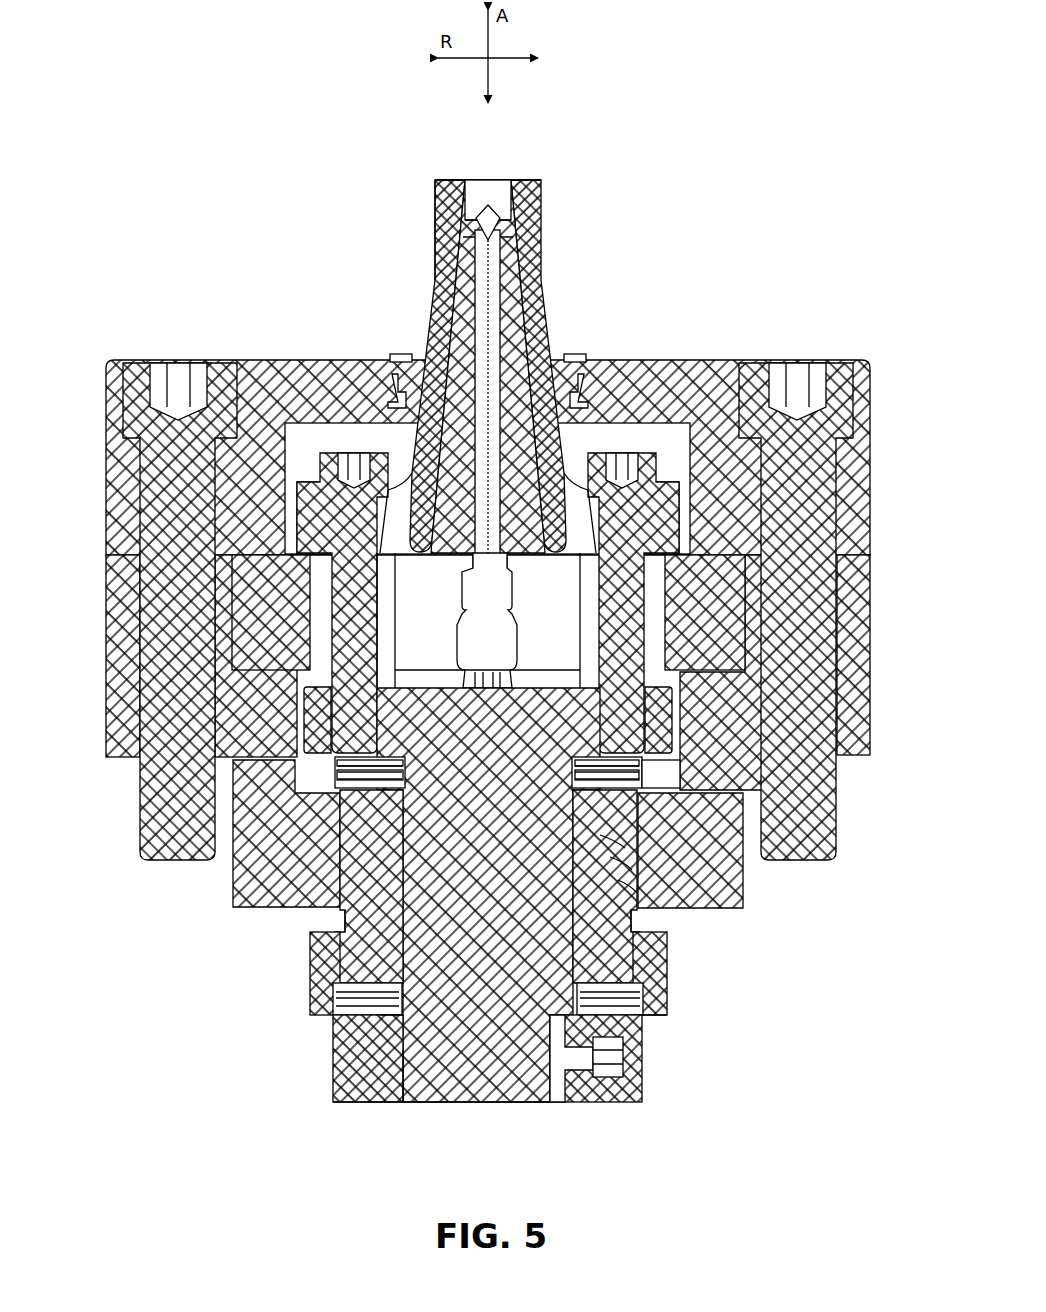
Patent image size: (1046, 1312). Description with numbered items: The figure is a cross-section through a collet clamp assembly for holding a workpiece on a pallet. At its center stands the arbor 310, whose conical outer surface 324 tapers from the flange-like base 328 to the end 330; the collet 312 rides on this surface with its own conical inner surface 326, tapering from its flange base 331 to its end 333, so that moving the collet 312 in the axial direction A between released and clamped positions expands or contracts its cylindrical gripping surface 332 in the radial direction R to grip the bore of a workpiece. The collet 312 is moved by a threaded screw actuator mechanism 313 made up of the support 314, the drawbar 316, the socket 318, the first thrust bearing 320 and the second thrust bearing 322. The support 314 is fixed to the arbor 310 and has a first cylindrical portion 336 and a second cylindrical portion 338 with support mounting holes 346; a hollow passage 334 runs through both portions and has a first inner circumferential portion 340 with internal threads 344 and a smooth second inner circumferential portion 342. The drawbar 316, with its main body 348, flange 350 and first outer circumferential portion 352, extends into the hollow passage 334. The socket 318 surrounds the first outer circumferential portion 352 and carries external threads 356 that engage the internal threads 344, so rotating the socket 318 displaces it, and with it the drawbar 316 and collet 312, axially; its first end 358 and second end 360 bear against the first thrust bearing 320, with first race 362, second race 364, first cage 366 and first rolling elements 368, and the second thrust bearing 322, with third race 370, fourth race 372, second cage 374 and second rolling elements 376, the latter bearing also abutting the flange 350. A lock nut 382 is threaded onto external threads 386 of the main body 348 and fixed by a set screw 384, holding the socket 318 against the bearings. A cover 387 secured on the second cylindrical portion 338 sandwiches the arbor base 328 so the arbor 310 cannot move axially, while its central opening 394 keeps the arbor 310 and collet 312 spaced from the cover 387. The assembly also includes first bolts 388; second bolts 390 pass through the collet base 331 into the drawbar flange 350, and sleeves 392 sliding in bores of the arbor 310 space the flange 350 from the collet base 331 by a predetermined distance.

The arbor 310 is at (493, 178).
The collet 312 is at (546, 222).
The threaded screw actuator mechanism 313 is at (334, 1104).
The support 314 is at (875, 703).
The drawbar 316 is at (455, 1104).
The socket 318 is at (652, 1020).
The first thrust bearing 320 is at (330, 774).
The second thrust bearing 322 is at (643, 1000).
The outer surface 324 is at (518, 332).
The inner surface 326 is at (452, 292).
The base 328 is at (232, 600).
The end 330 is at (478, 180).
The base 331 is at (300, 425).
The gripping surface 332 is at (543, 190).
The end 333 is at (440, 180).
The hollow passage 334 is at (300, 757).
The first cylindrical portion 336 is at (233, 906).
The second cylindrical portion 338 is at (745, 660).
The first inner circumferential portion 340 is at (610, 857).
The second inner circumferential portion 342 is at (770, 762).
The internal threads 344 is at (618, 880).
The support mounting hole 346 is at (310, 662).
The main body 348 is at (512, 1098).
The flange 350 is at (302, 735).
The first outer circumferential portion 352 is at (403, 958).
The external threads 356 is at (600, 835).
The first end 358 is at (600, 968).
The second end 360 is at (390, 795).
The first race 362 is at (368, 965).
The second race 364 is at (350, 1025).
The first cage 366 is at (340, 1000).
The first rolling elements 368 is at (385, 1017).
The third race 370 is at (690, 760).
The fourth race 372 is at (672, 787).
The second cage 374 is at (680, 770).
The second rolling elements 376 is at (598, 790).
The lock nut 382 is at (642, 1098).
The set screw 384 is at (607, 1080).
The external threads 386 is at (403, 1104).
The cover 387 is at (720, 358).
The first bolts 388 is at (135, 372).
The second bolts 390 is at (350, 462).
The sleeves 392 is at (232, 625).
The central opening 394 is at (585, 358).